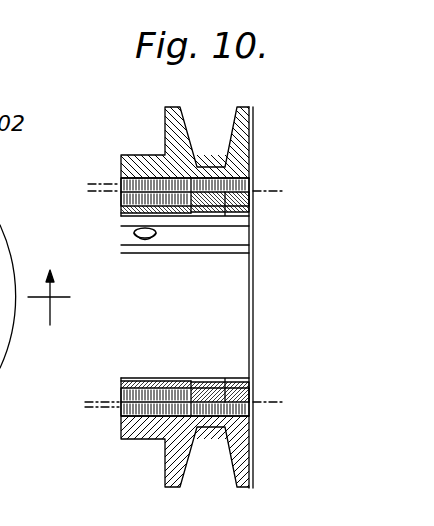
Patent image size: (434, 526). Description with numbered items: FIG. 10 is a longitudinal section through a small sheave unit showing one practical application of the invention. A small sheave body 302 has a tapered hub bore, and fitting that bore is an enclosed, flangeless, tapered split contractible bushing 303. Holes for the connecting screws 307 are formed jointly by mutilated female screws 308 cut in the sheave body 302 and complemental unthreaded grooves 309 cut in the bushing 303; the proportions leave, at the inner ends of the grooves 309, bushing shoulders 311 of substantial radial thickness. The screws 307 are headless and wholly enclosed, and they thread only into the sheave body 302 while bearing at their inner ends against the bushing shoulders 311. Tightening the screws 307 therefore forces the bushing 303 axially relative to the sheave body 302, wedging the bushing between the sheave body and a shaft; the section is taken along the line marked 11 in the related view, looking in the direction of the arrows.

The sheave body 302 is at (160, 155).
The tapered split contractible bushing 303 is at (225, 206).
The connecting screws 307 is at (118, 198).
The mutilated female screws 308 is at (253, 154).
The unthreaded grooves 309 is at (114, 208).
The bushing shoulders 311 is at (205, 198).
The direction of travel 11 is at (56, 352).